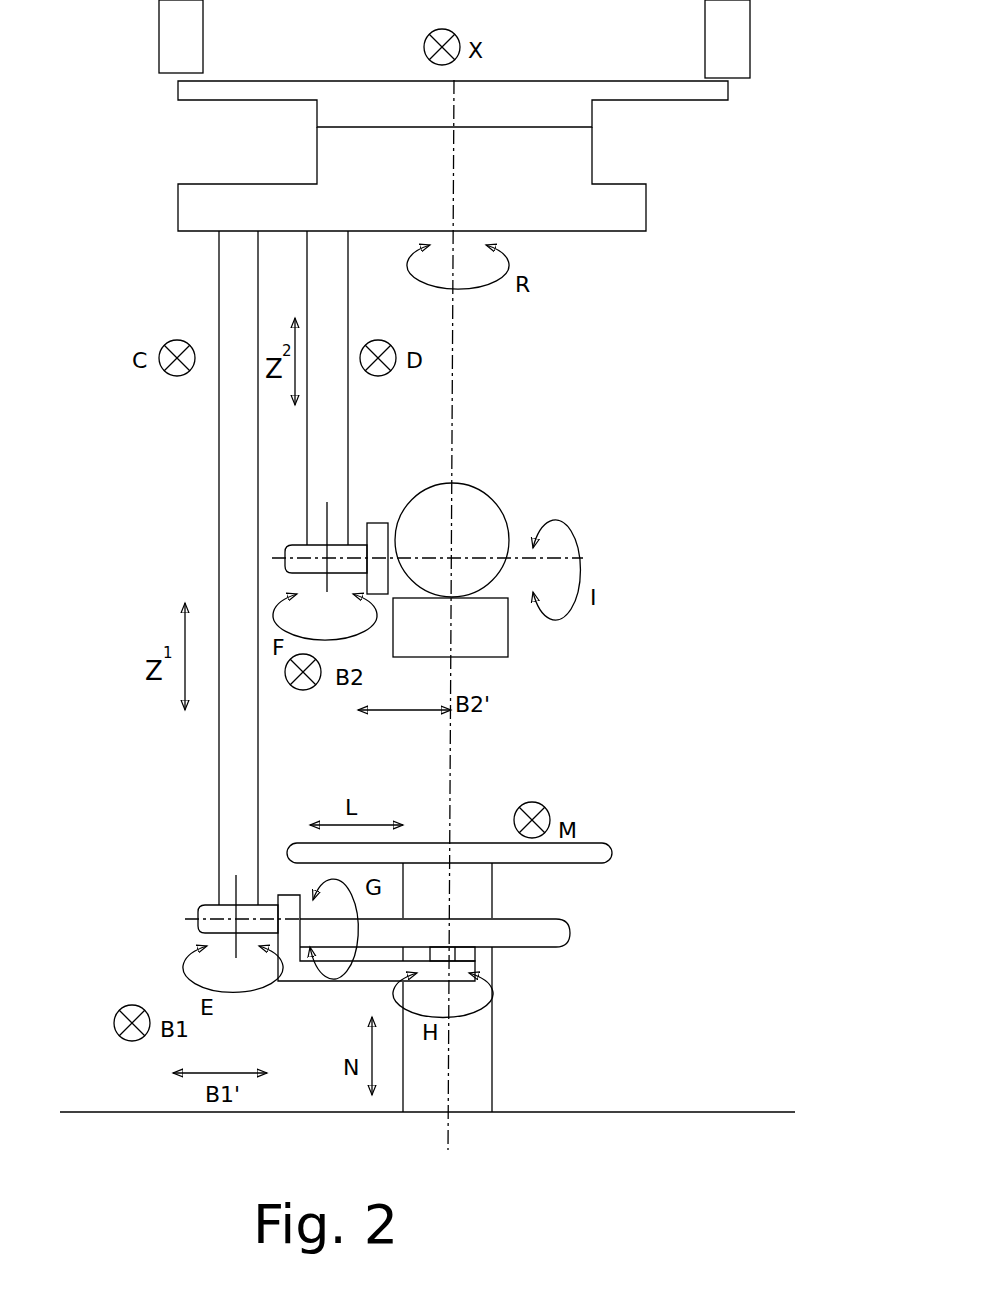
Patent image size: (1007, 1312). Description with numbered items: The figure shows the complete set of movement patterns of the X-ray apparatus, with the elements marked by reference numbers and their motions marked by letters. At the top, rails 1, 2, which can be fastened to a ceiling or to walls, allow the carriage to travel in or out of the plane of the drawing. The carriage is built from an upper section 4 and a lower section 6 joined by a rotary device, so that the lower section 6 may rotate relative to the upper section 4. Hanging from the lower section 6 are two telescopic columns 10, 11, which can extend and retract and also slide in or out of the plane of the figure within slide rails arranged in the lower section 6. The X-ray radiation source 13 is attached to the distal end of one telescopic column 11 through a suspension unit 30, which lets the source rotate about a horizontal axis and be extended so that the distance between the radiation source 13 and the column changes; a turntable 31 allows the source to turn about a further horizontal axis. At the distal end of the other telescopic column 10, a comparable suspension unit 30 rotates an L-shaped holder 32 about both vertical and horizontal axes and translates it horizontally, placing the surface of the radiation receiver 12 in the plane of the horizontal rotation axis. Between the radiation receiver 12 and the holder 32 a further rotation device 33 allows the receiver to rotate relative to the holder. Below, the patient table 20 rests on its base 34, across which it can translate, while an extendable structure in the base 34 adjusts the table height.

The rail 1 is at (725, 50).
The rail 2 is at (178, 45).
The upper section of the carriage 4 is at (728, 88).
The lower section of the carriage 6 is at (620, 210).
The telescopic column 10 is at (248, 292).
The telescopic column 11 is at (328, 312).
The radiation receiver 12 is at (545, 935).
The X-ray radiation source 13 is at (465, 505).
The patient table 20 is at (612, 852).
The suspension unit 30 is at (292, 545).
The turntable 31 is at (378, 535).
The holder 32 is at (298, 972).
The rotation device 33 is at (460, 953).
The base of the table 34 is at (475, 1070).